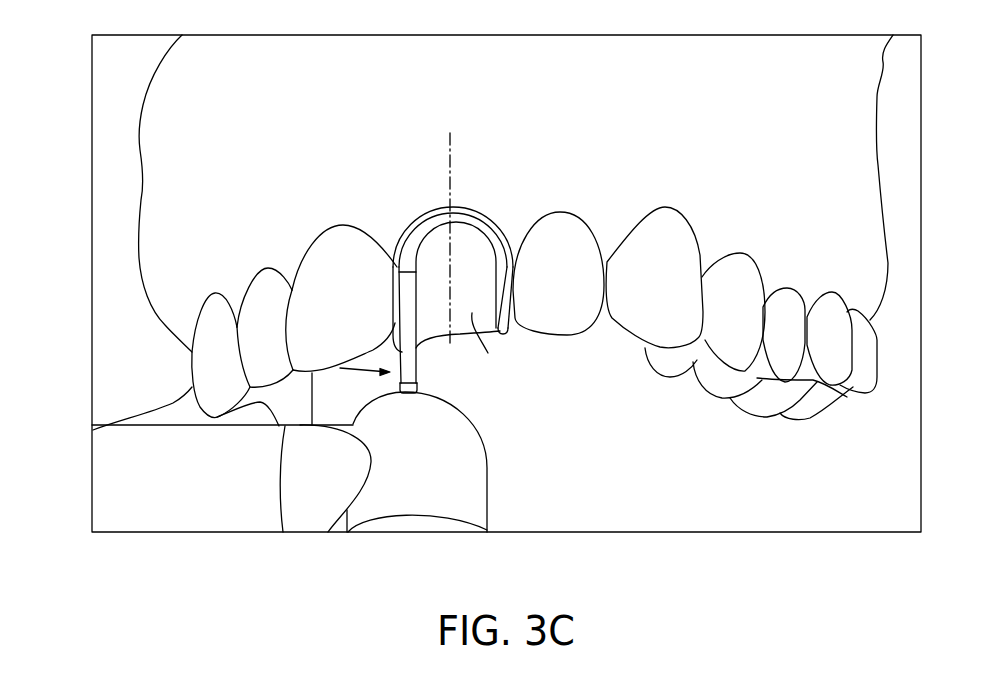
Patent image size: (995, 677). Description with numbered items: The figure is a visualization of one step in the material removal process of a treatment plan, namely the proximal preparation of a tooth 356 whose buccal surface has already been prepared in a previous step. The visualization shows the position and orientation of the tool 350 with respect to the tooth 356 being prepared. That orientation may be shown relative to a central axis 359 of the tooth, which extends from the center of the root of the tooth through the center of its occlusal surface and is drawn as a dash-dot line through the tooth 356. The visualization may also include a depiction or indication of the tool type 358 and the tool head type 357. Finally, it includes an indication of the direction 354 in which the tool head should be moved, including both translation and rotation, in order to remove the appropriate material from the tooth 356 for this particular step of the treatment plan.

The tool 350 is at (357, 535).
The direction 354 is at (389, 346).
The tooth 356 is at (415, 382).
The tool head type 357 is at (340, 368).
The tool type 358 is at (175, 535).
The central axis 359 is at (452, 172).